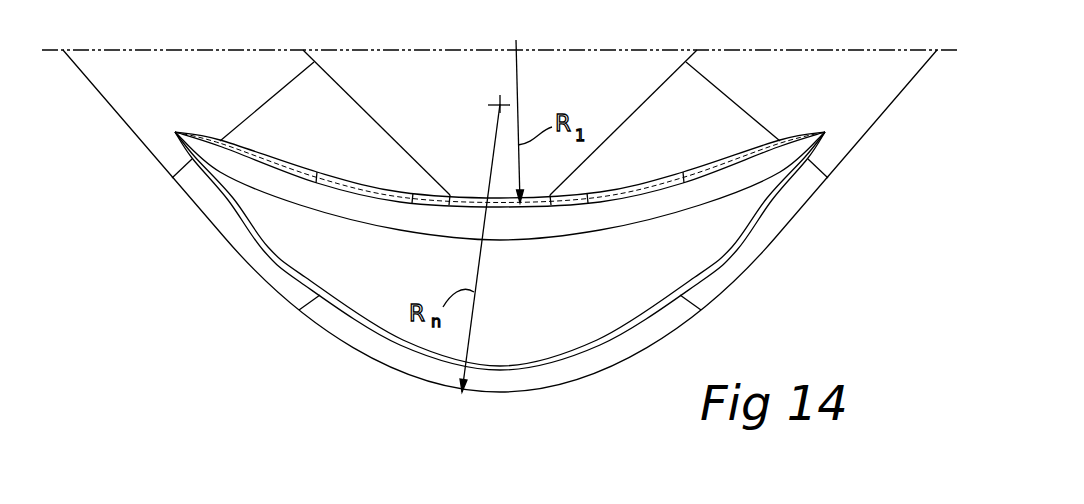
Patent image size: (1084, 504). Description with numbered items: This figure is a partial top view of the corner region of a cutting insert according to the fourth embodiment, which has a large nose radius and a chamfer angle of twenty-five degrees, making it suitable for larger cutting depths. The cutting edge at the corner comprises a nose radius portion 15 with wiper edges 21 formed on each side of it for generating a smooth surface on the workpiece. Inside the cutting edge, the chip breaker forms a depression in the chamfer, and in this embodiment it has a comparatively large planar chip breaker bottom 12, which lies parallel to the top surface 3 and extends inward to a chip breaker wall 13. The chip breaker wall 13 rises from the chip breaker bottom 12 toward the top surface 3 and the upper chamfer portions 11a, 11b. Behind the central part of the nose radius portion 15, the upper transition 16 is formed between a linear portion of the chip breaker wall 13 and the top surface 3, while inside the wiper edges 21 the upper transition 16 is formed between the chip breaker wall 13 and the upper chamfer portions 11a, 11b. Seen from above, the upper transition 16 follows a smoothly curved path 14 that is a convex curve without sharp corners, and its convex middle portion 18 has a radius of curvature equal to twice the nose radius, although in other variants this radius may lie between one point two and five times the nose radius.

The top surface 3 is at (472, 93).
The upper chamfer portion 11a is at (325, 134).
The upper chamfer portion 11b is at (712, 134).
The chip breaker bottom 12 is at (372, 275).
The chip breaker wall 13 is at (727, 182).
The smoothly curved path 14 is at (600, 196).
The nose radius portion 15 is at (493, 395).
The upper transition 16 is at (632, 197).
The convex middle portion 18 is at (500, 207).
The wiper edges 21 is at (272, 288).